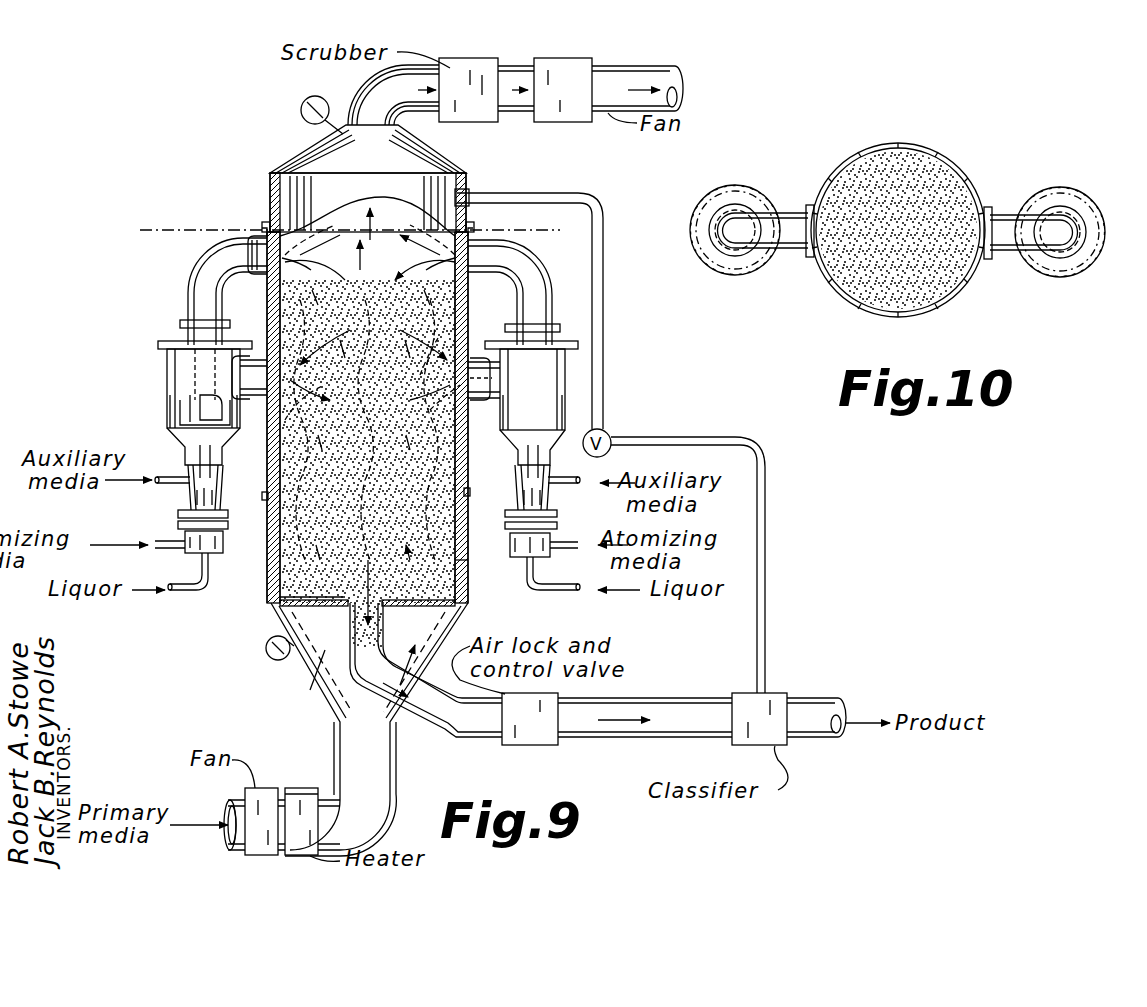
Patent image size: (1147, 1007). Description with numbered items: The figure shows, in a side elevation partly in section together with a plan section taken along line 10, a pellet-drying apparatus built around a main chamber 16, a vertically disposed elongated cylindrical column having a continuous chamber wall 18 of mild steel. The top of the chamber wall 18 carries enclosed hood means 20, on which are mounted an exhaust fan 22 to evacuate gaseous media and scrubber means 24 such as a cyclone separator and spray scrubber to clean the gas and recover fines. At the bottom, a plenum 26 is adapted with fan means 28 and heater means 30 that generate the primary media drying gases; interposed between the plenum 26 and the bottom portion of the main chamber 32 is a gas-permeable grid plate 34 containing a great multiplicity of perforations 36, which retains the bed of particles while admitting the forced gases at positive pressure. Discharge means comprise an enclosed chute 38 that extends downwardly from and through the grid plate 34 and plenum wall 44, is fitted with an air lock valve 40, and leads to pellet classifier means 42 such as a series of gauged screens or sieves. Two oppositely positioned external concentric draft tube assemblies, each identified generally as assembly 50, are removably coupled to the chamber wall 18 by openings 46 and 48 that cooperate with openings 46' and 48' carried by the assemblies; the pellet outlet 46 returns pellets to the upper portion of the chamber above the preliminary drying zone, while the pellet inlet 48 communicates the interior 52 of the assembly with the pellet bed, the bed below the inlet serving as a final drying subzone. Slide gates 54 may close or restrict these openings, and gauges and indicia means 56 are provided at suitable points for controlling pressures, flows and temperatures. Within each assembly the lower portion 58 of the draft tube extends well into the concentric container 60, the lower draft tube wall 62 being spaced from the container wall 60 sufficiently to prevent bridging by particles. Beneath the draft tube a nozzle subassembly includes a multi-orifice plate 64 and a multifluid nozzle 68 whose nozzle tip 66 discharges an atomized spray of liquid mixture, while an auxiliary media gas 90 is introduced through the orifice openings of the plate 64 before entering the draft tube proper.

In FIG. 9, the line 10— 10 is at (147, 252).
In FIG. 9, the main chamber 16 is at (428, 520).
In FIG. 10, the main chamber 16 is at (898, 198).
In FIG. 9, the chamber wall 18 is at (458, 528).
In FIG. 10, the chamber wall 18 is at (956, 166).
In FIG. 9, the hood means 20 is at (418, 148).
In FIG. 9, the exhaust fan 22 is at (550, 118).
In FIG. 9, the scrubber means 24 is at (478, 118).
In FIG. 9, the plenum 26 is at (432, 632).
In FIG. 9, the fan means 28 is at (252, 852).
In FIG. 9, the heater means 30 is at (302, 790).
In FIG. 9, the bottom portion of the main chamber 32 is at (466, 572).
In FIG. 9, the grid plate 34 is at (440, 602).
In FIG. 9, the perforations 36 is at (330, 600).
In FIG. 9, the chute 38 is at (456, 733).
In FIG. 9, the air lock valve 40 is at (530, 746).
In FIG. 9, the pellet classifier means 42 is at (774, 694).
In FIG. 9, the plenum wall 44 is at (308, 660).
In FIG. 9, the pellet outlet 46 is at (370, 244).
In FIG. 9, the draft tube assembly outlet opening 46' is at (226, 236).
In FIG. 9, the pellet inlet 48 is at (366, 375).
In FIG. 9, the draft tube assembly inlet opening 48' is at (508, 378).
In FIG. 9, the external concentric draft tube assembly 50 is at (160, 350).
In FIG. 10, the external concentric draft tube assembly 50 is at (740, 185).
In FIG. 9, the interior of the concentric draft tube assembly 52 is at (190, 418).
In FIG. 9, the slide gates 54 is at (265, 222).
In FIG. 9, the gauges and indicia means 56 is at (302, 104).
In FIG. 9, the lower portion of the draft tube 58 is at (200, 400).
In FIG. 9, the concentric container 60 is at (175, 420).
In FIG. 10, the concentric container 60 is at (745, 275).
In FIG. 9, the lower draft tube wall 62 is at (190, 405).
In FIG. 9, the multi-orifice plate 64 is at (188, 470).
In FIG. 9, the nozzle tip 66 is at (212, 466).
In FIG. 9, the multifluid nozzle 68 is at (214, 486).
In FIG. 9, the auxiliary media gas 90 is at (170, 484).